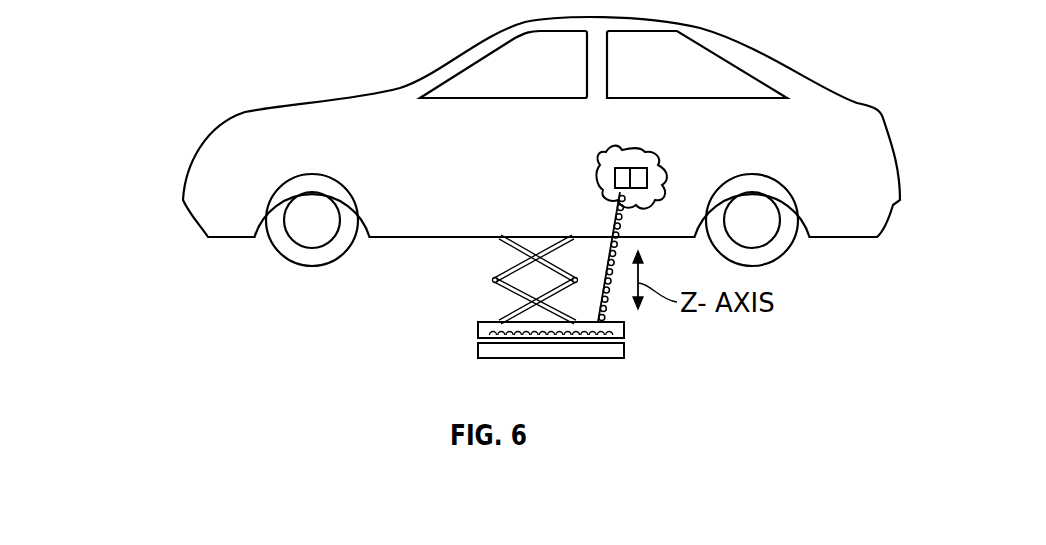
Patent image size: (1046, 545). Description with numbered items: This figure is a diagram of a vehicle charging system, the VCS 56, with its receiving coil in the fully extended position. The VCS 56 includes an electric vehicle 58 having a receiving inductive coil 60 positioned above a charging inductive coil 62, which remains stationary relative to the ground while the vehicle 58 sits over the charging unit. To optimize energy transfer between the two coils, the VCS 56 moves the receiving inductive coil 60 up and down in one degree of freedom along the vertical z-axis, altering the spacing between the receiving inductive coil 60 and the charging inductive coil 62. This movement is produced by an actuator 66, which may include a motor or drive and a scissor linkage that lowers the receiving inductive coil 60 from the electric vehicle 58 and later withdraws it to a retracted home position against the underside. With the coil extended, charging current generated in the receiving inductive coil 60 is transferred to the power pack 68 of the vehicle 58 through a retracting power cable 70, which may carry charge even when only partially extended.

The VCS (vehicle charging system) 56 is at (208, 64).
The electric vehicle 58 is at (873, 140).
The receiving inductive coil 60 is at (624, 330).
The charging inductive coil 62 is at (478, 348).
The actuator 66 is at (494, 279).
The power pack 68 is at (638, 173).
The power cable 70 is at (617, 237).